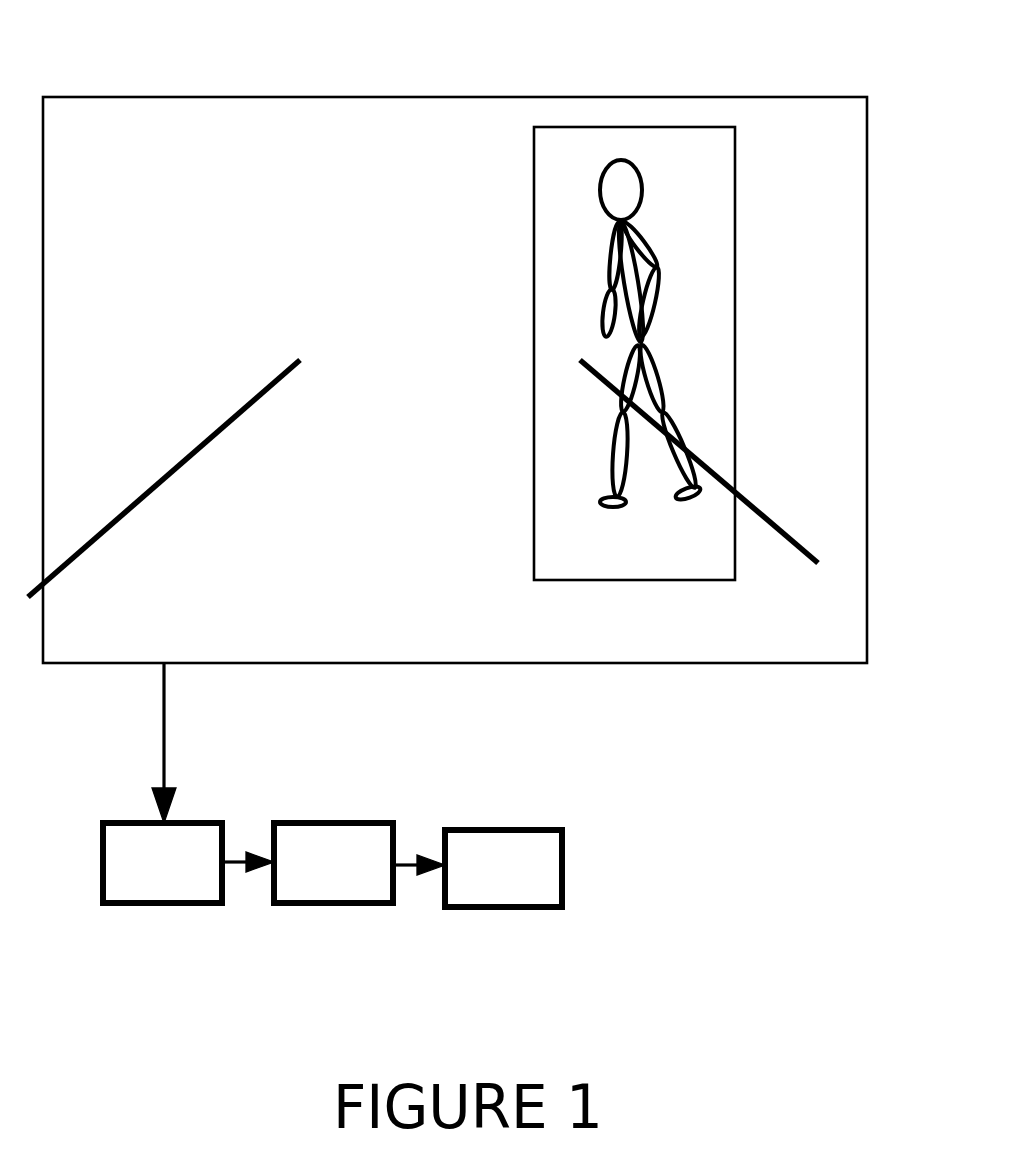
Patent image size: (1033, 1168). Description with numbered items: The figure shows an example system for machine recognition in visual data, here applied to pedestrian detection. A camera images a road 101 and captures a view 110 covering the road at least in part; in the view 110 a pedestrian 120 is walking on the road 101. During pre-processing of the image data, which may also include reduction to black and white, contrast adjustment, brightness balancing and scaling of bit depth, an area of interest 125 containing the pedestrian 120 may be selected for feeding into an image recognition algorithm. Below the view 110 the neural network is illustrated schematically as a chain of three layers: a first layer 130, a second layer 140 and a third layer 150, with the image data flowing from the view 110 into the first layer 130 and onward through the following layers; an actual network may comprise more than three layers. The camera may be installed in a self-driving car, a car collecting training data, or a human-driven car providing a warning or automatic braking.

The road 101 is at (180, 457).
The view 110 is at (427, 664).
The pedestrian 120 is at (657, 250).
The area of interest 125 is at (664, 127).
The first layer 130 is at (186, 878).
The second layer 140 is at (357, 876).
The third layer 150 is at (526, 881).